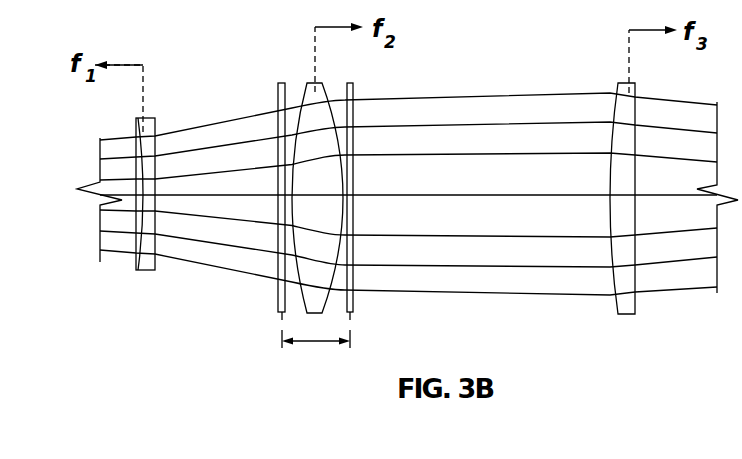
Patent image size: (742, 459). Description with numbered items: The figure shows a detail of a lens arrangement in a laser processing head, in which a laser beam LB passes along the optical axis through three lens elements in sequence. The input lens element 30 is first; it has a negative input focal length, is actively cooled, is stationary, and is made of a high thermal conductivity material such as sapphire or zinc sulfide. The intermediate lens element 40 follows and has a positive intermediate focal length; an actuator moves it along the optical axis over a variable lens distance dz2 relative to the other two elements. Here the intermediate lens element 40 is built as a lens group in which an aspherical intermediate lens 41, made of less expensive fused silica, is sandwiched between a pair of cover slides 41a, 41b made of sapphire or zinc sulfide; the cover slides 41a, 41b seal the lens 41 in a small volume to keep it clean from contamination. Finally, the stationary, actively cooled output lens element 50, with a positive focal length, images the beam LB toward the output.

The input lens element 30 is at (143, 272).
The intermediate lens element 40 is at (320, 189).
The intermediate lens 41 is at (297, 277).
The cover slide 41a is at (281, 83).
The cover slide 41b is at (350, 83).
The output lens element 50 is at (627, 314).
The laser beam LB is at (497, 97).
The variable lens distance dz2 is at (315, 341).